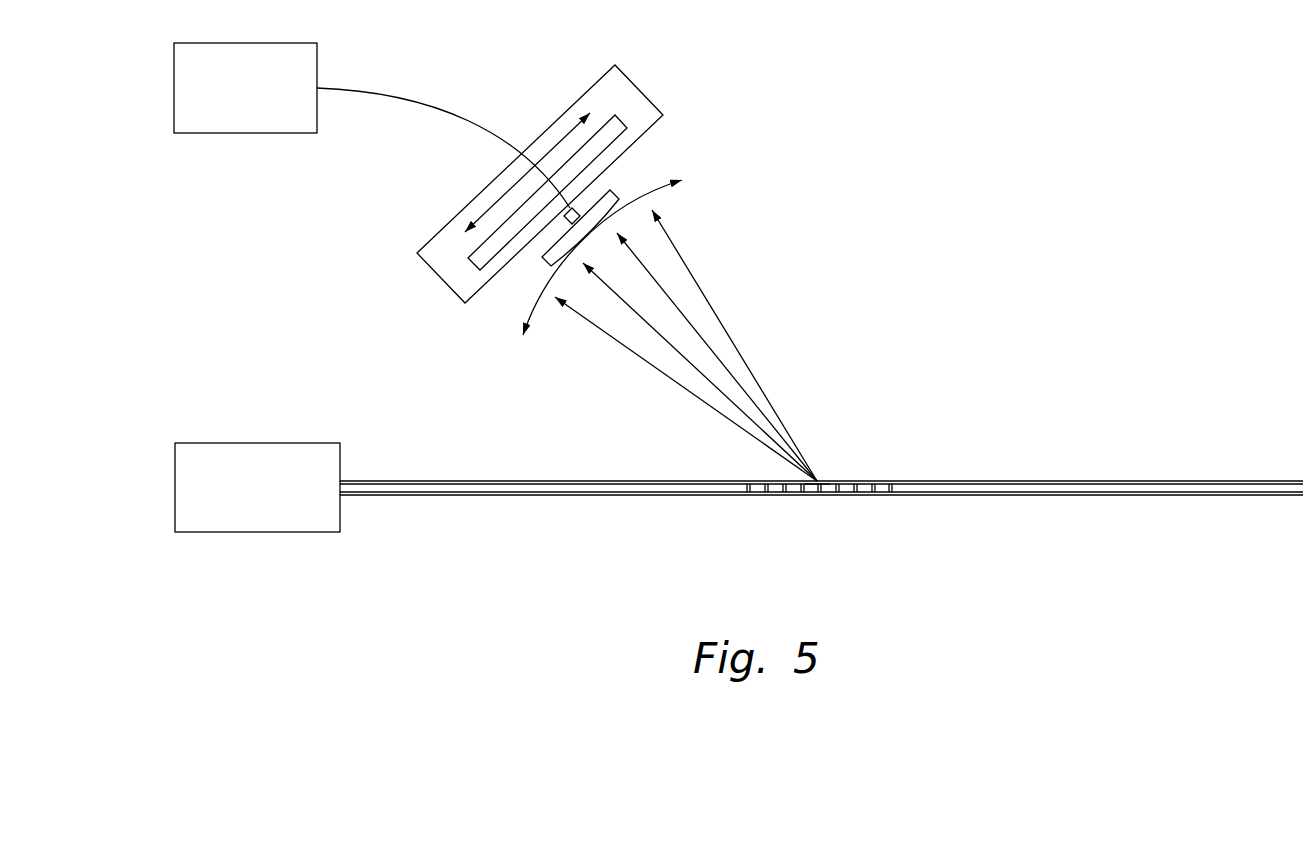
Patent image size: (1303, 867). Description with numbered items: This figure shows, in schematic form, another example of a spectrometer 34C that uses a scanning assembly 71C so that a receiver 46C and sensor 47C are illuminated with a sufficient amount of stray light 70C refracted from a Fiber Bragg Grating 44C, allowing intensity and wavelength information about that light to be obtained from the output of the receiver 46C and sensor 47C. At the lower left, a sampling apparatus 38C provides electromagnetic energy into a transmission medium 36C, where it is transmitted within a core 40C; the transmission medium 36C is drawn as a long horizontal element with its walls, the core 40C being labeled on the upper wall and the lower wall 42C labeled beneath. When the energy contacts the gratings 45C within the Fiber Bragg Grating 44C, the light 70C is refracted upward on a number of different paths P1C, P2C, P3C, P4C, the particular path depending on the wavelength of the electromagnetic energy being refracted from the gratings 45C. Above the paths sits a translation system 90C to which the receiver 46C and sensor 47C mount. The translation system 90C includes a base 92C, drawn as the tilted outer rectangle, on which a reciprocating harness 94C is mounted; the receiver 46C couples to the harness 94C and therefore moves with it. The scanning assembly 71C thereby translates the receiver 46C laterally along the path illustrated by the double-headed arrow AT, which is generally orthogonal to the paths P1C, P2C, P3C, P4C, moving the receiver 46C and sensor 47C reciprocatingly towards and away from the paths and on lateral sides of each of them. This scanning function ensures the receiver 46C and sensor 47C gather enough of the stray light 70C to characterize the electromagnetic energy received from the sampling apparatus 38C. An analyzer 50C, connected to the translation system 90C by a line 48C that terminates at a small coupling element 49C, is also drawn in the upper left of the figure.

The spectrometer 34C is at (1115, 135).
The analyzer 50C is at (174, 88).
The optical fiber / signal path 48C is at (345, 88).
The translation system 90C is at (497, 83).
The base 92C is at (422, 270).
The reciprocating harness 94C is at (622, 118).
The optical coupler 49C is at (571, 207).
The arrow AT is at (498, 198).
The receiver 46C is at (540, 262).
The sensor 47C is at (610, 209).
The scanning assembly 71C is at (845, 190).
The light 70C is at (767, 346).
The path P1C is at (677, 250).
The path P2C is at (673, 303).
The path P3C is at (657, 333).
The path P4C is at (680, 387).
The sampling apparatus 38C is at (175, 486).
The transmission medium 36C is at (403, 465).
The core 40C is at (532, 482).
The second channel wall 42C is at (455, 496).
The Fiber Bragg Grating 44C is at (852, 460).
The gratings 45C is at (882, 497).